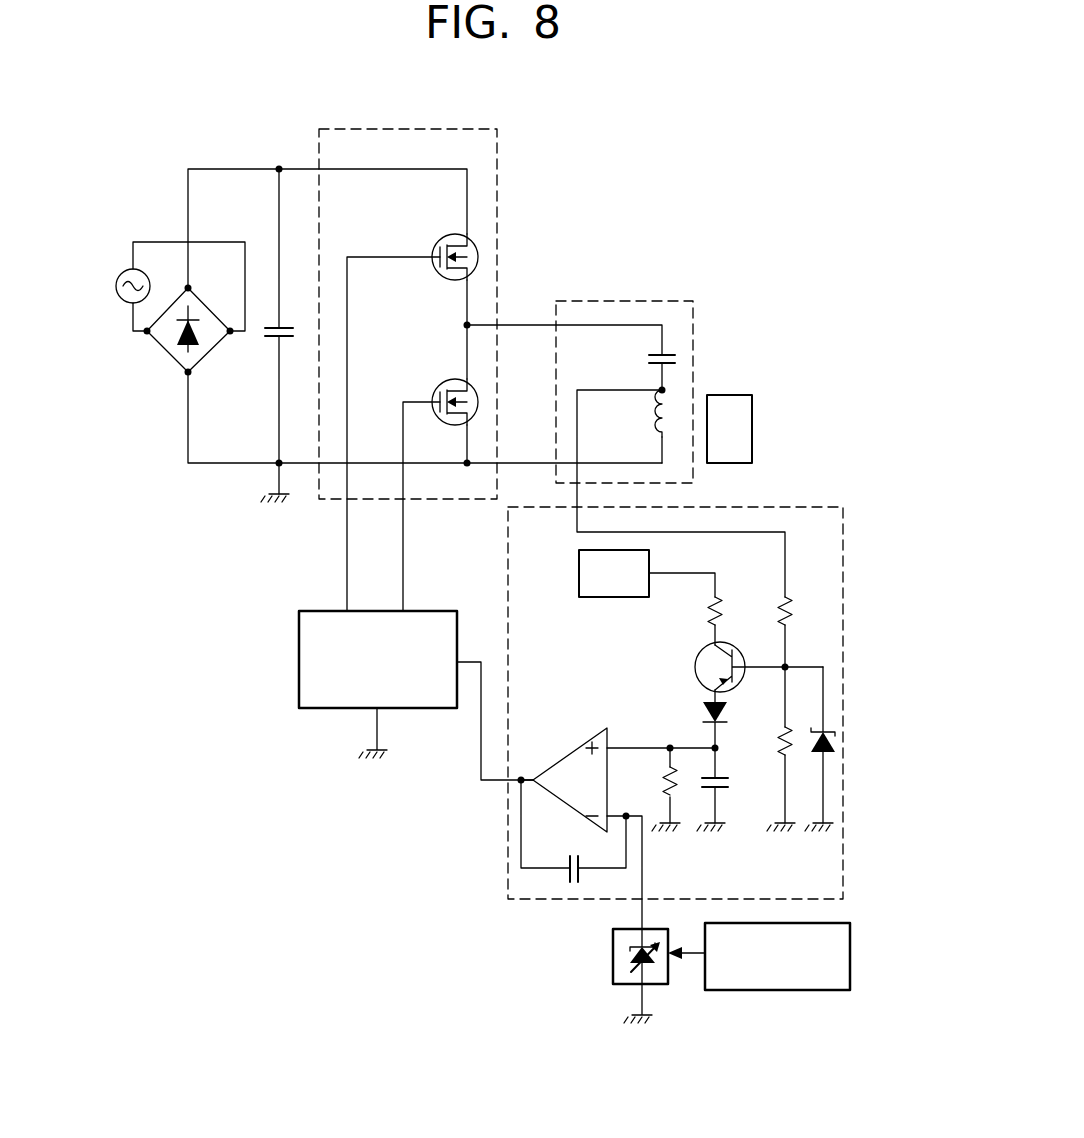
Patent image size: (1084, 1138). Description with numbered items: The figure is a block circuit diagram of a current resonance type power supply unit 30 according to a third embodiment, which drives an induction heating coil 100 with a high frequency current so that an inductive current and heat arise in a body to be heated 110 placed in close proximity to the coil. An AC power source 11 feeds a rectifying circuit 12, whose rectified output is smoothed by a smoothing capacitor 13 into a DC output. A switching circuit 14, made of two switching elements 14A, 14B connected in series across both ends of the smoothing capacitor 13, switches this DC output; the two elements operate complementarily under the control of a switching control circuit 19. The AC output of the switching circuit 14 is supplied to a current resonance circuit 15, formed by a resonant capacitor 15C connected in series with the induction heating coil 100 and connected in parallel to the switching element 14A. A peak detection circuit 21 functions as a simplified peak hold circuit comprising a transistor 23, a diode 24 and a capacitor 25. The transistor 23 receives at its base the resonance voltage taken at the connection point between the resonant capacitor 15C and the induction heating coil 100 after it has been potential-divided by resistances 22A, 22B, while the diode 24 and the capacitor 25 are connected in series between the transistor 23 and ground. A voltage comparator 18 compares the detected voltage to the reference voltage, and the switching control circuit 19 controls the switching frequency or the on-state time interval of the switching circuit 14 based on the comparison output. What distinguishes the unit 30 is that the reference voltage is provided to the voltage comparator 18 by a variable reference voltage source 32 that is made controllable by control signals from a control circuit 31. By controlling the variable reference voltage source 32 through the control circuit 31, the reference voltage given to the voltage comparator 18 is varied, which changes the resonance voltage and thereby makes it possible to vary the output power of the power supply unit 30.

The AC power source 11 is at (124, 273).
The rectifying circuit 12 is at (165, 356).
The smoothing capacitor 13 is at (265, 334).
The switching circuit 14 is at (497, 158).
The switching element 14A is at (443, 383).
The switching element 14B is at (442, 238).
The current resonance circuit 15 is at (626, 300).
The resonant capacitor 15C is at (645, 360).
The induction heating coil 100 is at (657, 420).
The body to be heated 110 is at (740, 395).
The voltage comparator 18 is at (558, 758).
The switching control circuit 19 is at (299, 638).
The peak detection circuit 21 is at (843, 552).
The resistance 22A is at (780, 610).
The resistance 22B is at (778, 742).
The transistor 23 is at (697, 658).
The diode 24 is at (706, 708).
The capacitor 25 is at (720, 790).
The current resonance type power supply unit 30 is at (238, 760).
The control circuit 31 is at (790, 990).
The variable reference voltage source 32 is at (613, 956).